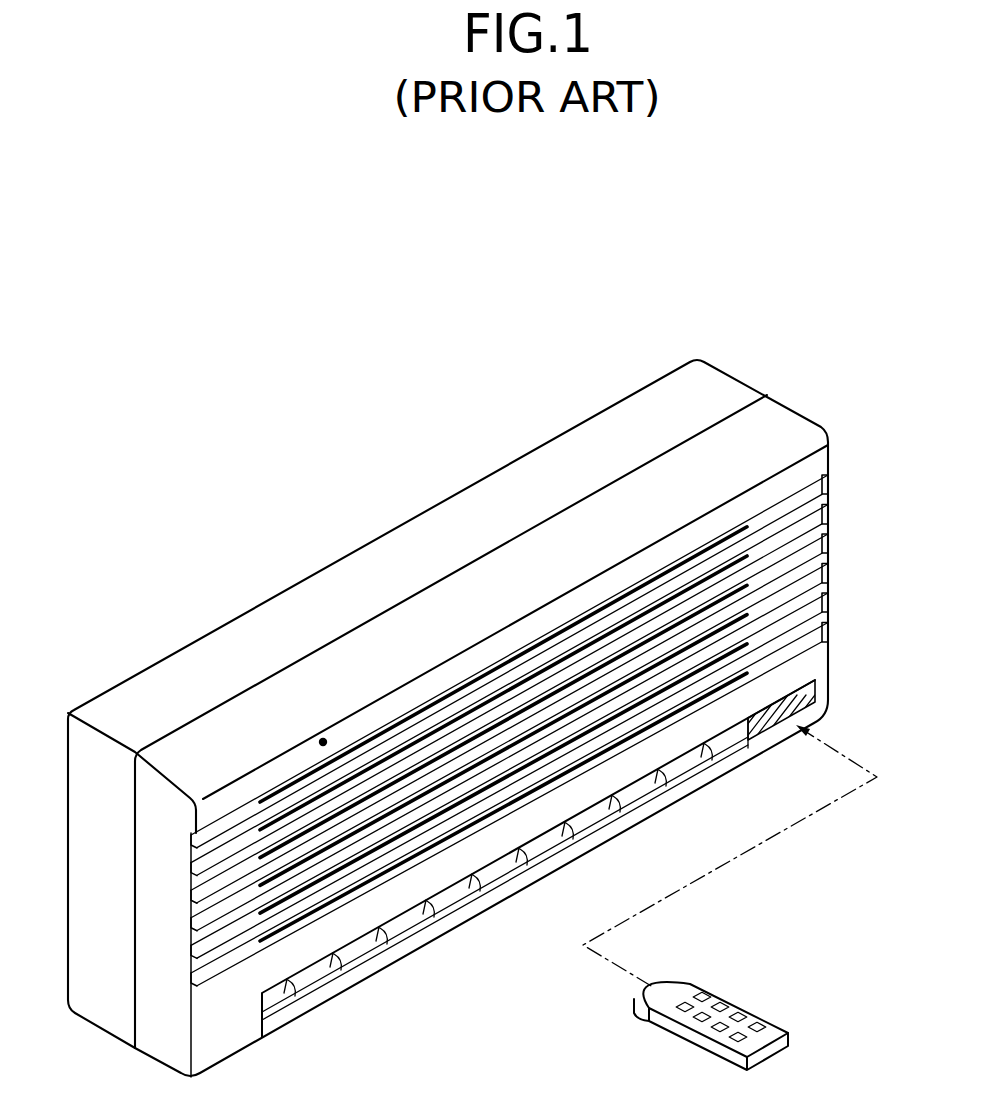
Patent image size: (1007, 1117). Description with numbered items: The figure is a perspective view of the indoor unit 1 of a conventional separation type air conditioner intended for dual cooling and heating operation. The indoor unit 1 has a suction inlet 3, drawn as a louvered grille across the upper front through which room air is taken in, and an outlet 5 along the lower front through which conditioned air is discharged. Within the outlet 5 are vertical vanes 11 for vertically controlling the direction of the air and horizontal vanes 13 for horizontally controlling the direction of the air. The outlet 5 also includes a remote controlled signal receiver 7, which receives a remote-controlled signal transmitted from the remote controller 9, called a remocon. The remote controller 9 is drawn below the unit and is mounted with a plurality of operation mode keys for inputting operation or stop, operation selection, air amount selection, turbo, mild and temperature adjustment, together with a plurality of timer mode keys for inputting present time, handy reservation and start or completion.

The indoor unit 1 is at (232, 578).
The suction inlet 3 is at (748, 600).
The outlet 5 is at (378, 973).
The remote controlled signal receiver 7 is at (813, 690).
The remote controller 9 is at (750, 1015).
The vertical vanes 11 is at (413, 938).
The horizontal vanes 13 is at (303, 1008).